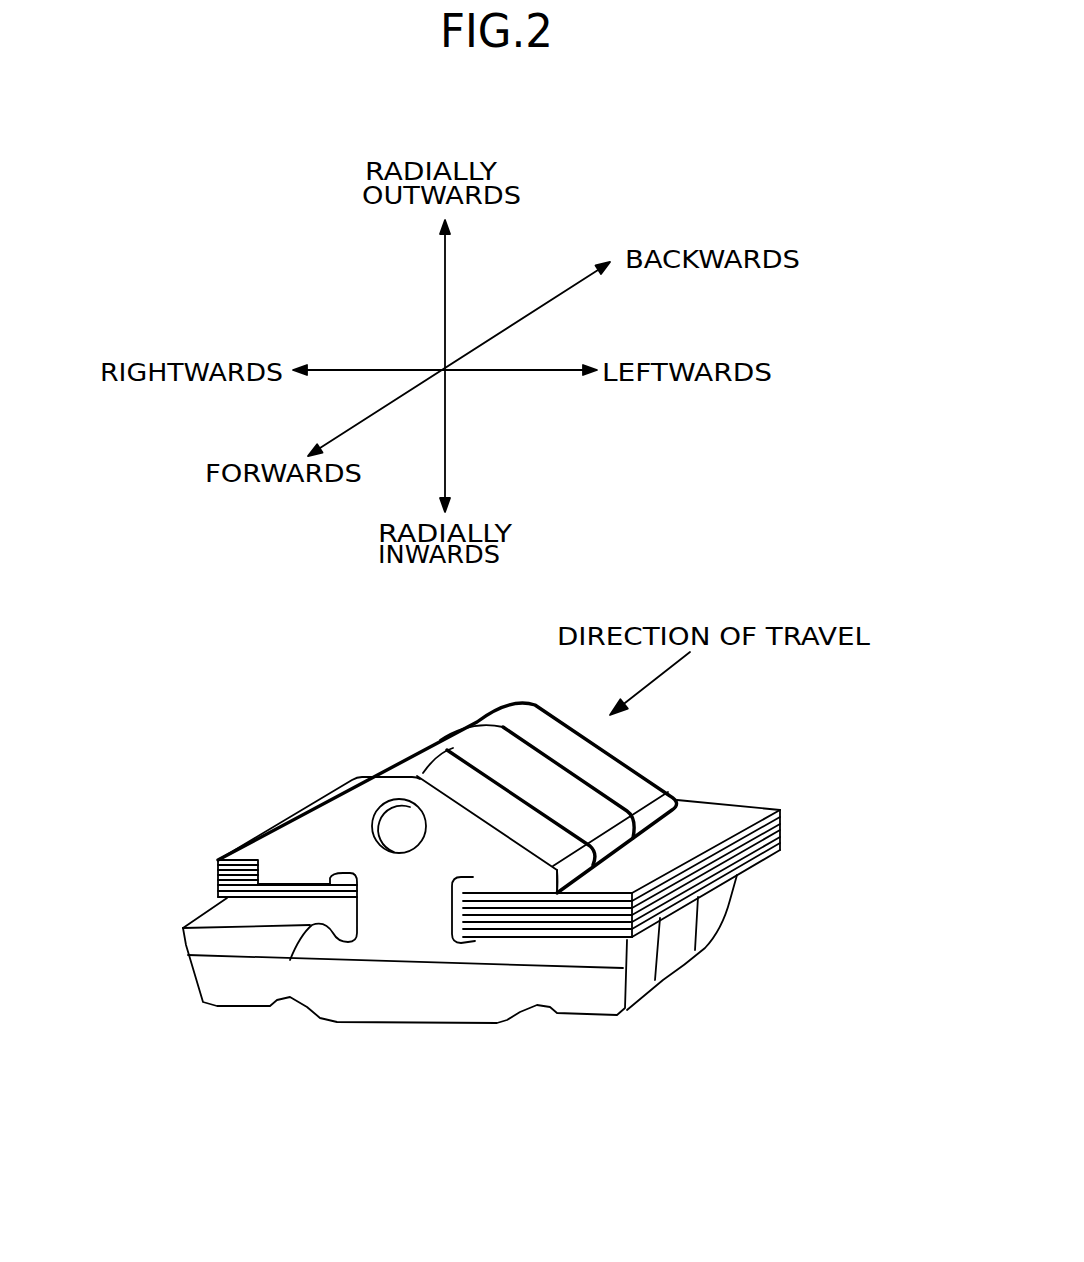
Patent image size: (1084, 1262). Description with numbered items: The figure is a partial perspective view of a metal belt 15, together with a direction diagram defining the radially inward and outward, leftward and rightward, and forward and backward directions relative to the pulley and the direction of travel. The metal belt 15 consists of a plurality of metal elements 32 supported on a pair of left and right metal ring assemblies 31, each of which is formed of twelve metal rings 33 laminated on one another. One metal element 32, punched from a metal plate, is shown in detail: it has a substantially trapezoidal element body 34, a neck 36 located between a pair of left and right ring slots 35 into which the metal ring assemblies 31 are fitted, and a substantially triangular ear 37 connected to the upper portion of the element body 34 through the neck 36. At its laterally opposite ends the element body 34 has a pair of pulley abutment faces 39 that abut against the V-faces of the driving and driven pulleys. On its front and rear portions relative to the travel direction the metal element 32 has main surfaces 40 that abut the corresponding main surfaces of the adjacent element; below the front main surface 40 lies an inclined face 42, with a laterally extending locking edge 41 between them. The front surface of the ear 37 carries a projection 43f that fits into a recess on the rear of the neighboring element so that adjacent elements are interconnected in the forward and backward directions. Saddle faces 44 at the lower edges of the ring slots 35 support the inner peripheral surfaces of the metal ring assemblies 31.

The metal belt 15 is at (453, 680).
The metal ring assembly 31 is at (235, 843).
The metal element 32 is at (502, 1047).
The metal ring 33 is at (218, 862).
The element body 34 is at (217, 990).
The ring slot 35 is at (290, 960).
The neck 36 is at (407, 933).
The ear 37 is at (335, 833).
The pulley abutment face 39 is at (637, 987).
The main surface 40 is at (422, 908).
The locking edge 41 is at (320, 960).
The inclined face 42 is at (423, 1014).
The projection 43f is at (388, 823).
The saddle face 44 is at (263, 910).